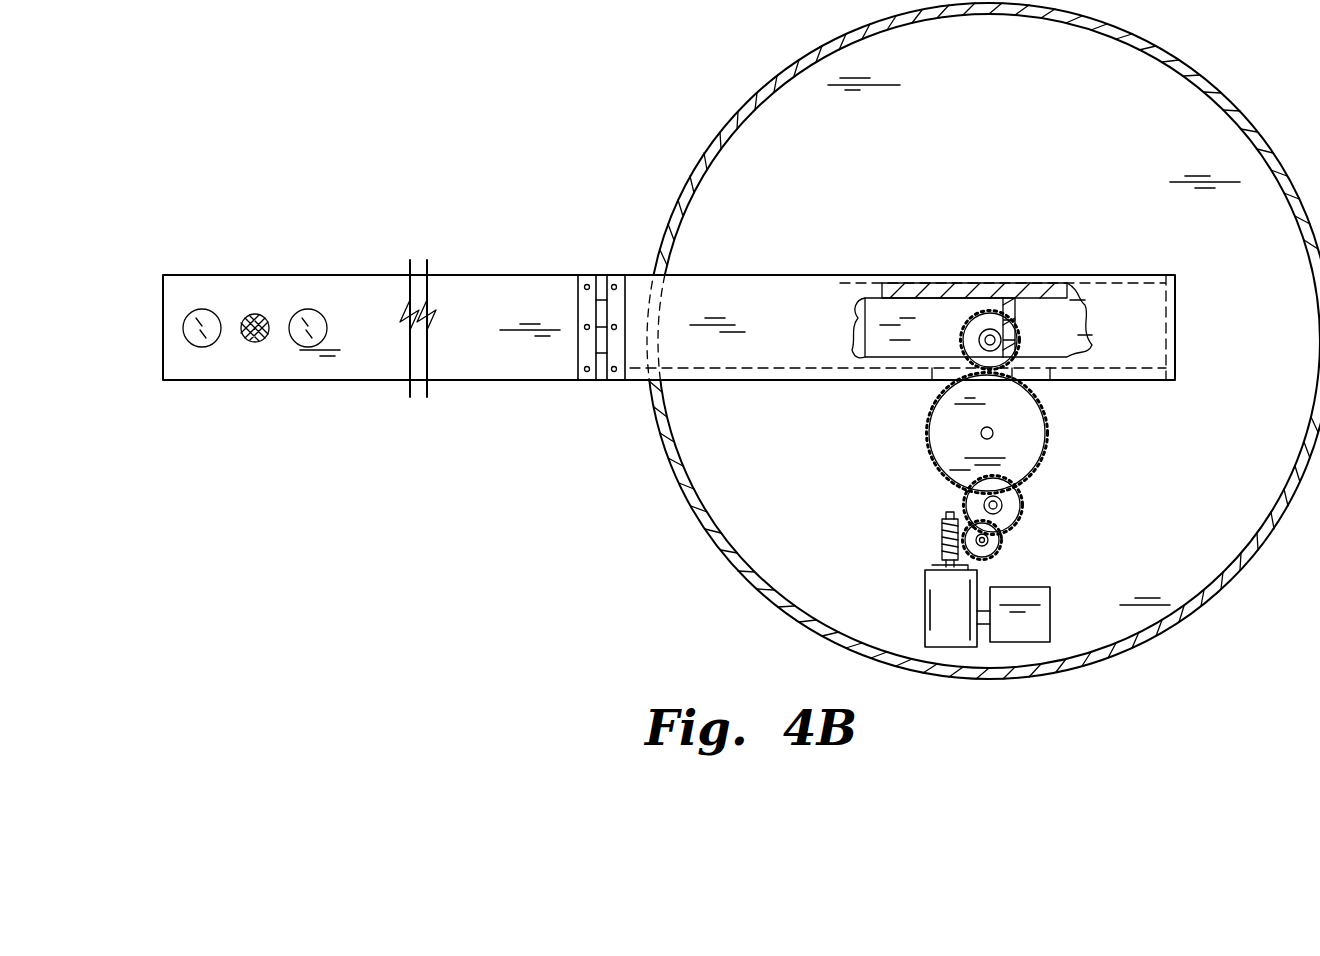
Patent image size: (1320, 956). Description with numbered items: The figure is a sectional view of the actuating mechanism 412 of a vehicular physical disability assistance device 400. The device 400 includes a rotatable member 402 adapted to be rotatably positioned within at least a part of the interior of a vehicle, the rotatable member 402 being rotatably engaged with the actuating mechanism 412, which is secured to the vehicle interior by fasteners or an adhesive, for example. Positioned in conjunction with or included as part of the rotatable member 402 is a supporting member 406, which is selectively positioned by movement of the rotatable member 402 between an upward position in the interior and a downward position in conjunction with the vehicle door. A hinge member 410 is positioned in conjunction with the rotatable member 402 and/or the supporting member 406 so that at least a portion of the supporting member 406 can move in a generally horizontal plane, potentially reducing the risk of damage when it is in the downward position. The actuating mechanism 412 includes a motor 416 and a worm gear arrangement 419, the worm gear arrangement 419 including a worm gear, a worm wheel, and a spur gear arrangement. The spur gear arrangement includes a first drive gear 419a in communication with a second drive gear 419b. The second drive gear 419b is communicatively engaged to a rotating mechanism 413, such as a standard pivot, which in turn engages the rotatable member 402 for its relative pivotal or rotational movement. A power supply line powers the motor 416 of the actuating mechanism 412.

The vehicular physical disability assistance device 400 is at (275, 174).
The rotatable member 402 is at (748, 275).
The supporting member 406 is at (328, 275).
The hinge member 410 is at (600, 275).
The actuating mechanism 412 is at (697, 112).
The rotating mechanism 413 is at (985, 330).
The motor 416 is at (937, 583).
The worm gear arrangement 419 is at (1030, 502).
The first drive gear 419a is at (1033, 435).
The second drive gear 419b is at (960, 318).